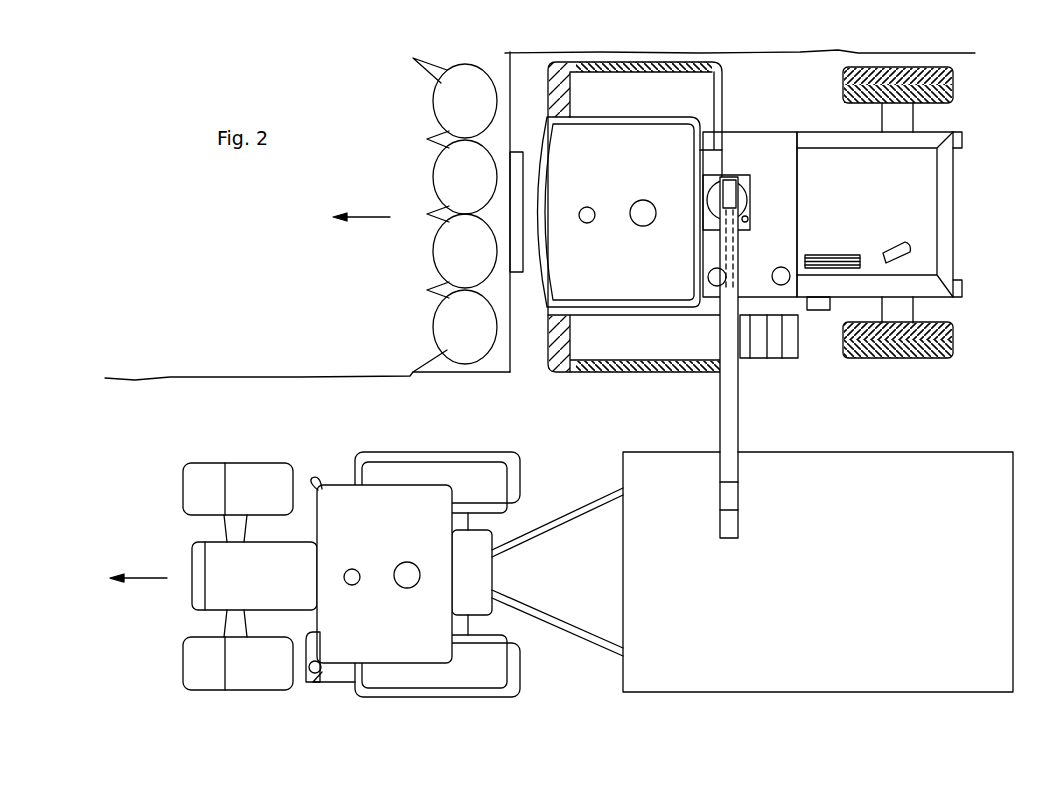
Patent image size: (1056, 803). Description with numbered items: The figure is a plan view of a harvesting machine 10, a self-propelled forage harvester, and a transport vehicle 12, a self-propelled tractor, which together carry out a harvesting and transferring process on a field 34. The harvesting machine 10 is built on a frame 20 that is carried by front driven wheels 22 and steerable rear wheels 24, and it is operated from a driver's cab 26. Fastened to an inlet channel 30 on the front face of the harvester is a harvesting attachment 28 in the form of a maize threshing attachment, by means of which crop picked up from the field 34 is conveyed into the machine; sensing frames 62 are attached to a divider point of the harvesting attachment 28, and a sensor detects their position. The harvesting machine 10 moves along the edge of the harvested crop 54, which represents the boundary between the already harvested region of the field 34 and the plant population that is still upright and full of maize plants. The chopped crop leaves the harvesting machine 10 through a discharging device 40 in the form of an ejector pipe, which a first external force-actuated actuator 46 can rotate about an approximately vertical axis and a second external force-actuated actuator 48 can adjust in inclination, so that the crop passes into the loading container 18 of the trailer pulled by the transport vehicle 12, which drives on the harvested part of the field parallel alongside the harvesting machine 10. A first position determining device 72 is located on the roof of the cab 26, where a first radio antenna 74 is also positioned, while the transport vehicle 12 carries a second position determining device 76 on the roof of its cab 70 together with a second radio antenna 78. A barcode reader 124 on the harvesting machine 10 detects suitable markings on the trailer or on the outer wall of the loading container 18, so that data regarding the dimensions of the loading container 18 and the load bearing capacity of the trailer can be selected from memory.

The harvesting machine 10 is at (975, 205).
The transport vehicle 12 is at (366, 599).
The loading container 18 is at (857, 590).
The frame 20 is at (772, 141).
The front driven wheels 22 is at (565, 358).
The steerable rear wheels 24 is at (953, 97).
The driver's cab 26 is at (624, 181).
The harvesting attachment 28 is at (483, 63).
The inlet channel 30 is at (512, 677).
The field 34 is at (223, 249).
The discharging device 40 is at (730, 413).
The first external force-actuated actuator 46 is at (748, 218).
The second external force-actuated actuator 48 is at (737, 268).
The edge of the harvested crop 54 is at (235, 377).
The sensing frames 62 is at (440, 300).
The cab 70 is at (397, 632).
The first position determining device 72 is at (643, 222).
The first radio antenna 74 is at (587, 223).
The second position determining device 76 is at (405, 562).
The second radio antenna 78 is at (350, 568).
The barcode reader 124 is at (818, 310).